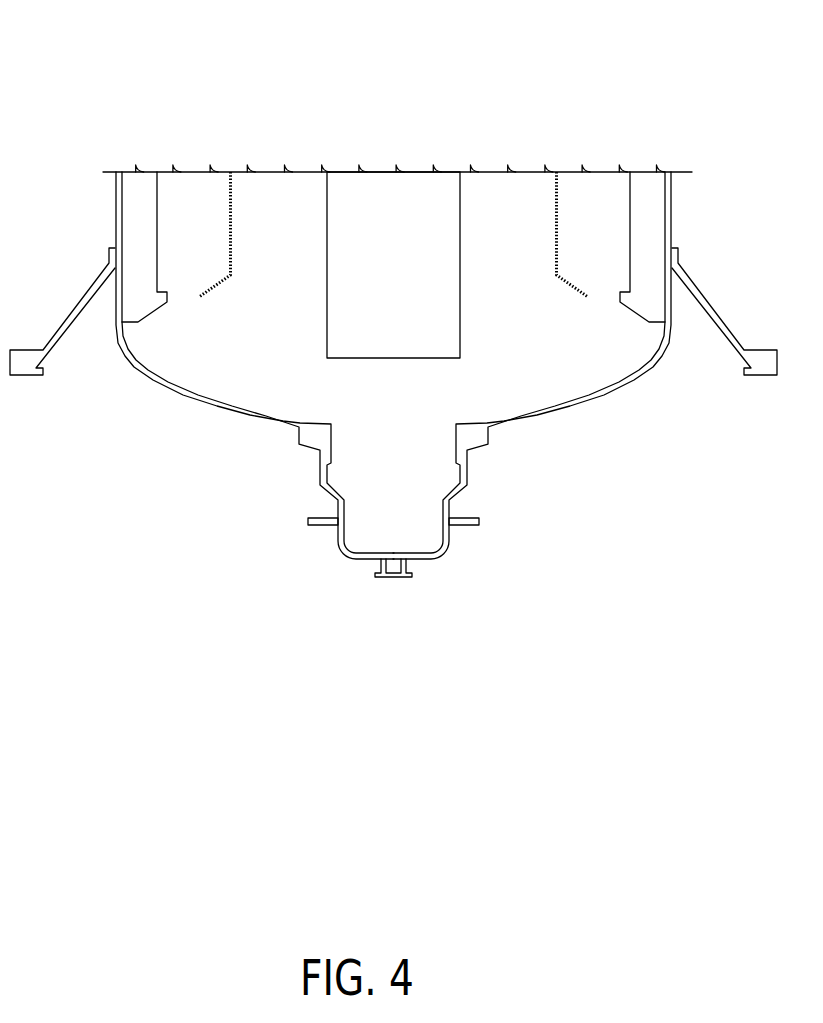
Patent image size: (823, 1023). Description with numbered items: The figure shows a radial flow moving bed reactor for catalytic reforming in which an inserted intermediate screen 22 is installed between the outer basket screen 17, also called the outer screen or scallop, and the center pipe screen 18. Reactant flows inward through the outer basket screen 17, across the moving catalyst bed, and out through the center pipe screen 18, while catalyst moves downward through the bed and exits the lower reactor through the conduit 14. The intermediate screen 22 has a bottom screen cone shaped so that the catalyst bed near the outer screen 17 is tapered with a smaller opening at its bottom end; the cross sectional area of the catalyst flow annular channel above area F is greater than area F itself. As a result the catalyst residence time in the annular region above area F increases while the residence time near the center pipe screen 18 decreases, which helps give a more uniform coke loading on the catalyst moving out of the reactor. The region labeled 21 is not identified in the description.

The conduit 14 is at (543, 500).
The outer basket screen 17 is at (630, 230).
The center pipe screen 18 is at (373, 202).
The chamber 21 is at (282, 195).
The inserted intermediate screen 22 is at (228, 247).
The area F is at (190, 295).